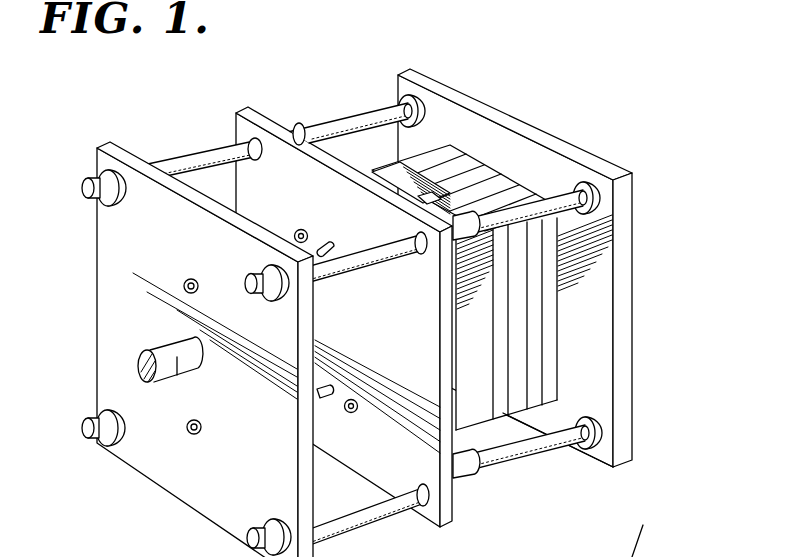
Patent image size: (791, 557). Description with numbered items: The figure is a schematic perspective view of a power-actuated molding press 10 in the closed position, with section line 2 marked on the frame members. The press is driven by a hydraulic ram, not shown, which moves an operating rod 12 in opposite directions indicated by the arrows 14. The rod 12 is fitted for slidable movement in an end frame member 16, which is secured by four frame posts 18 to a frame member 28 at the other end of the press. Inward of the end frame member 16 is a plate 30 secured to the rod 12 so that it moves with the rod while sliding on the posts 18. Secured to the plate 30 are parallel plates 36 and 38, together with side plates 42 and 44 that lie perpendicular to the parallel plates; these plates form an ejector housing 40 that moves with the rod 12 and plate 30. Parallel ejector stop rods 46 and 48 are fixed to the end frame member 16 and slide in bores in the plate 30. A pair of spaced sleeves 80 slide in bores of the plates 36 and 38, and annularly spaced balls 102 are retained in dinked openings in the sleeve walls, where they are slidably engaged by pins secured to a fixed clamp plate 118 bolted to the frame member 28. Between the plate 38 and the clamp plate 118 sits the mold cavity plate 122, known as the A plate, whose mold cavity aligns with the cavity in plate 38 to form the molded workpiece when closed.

The power-actuated molding press 10 is at (660, 233).
The operating rod 12 is at (172, 375).
The arrows 14 is at (162, 335).
The end frame member 16 is at (108, 146).
The frame posts 18 is at (192, 160).
The frame member 28 is at (408, 77).
The plate 30 is at (250, 115).
The parallel plate 36 is at (500, 410).
The parallel plate 38 is at (518, 393).
The ejector housing 40 is at (355, 145).
The side plate 42 is at (374, 170).
The side plate 44 is at (463, 413).
The ejector stop rod 46 is at (324, 246).
The ejector stop rod 48 is at (322, 387).
The sleeves 80 is at (421, 196).
The balls 102 is at (443, 203).
The fixed clamp plate 118 is at (545, 308).
The mold cavity plate 122 is at (533, 370).
The section line 2- 2 is at (270, 184).